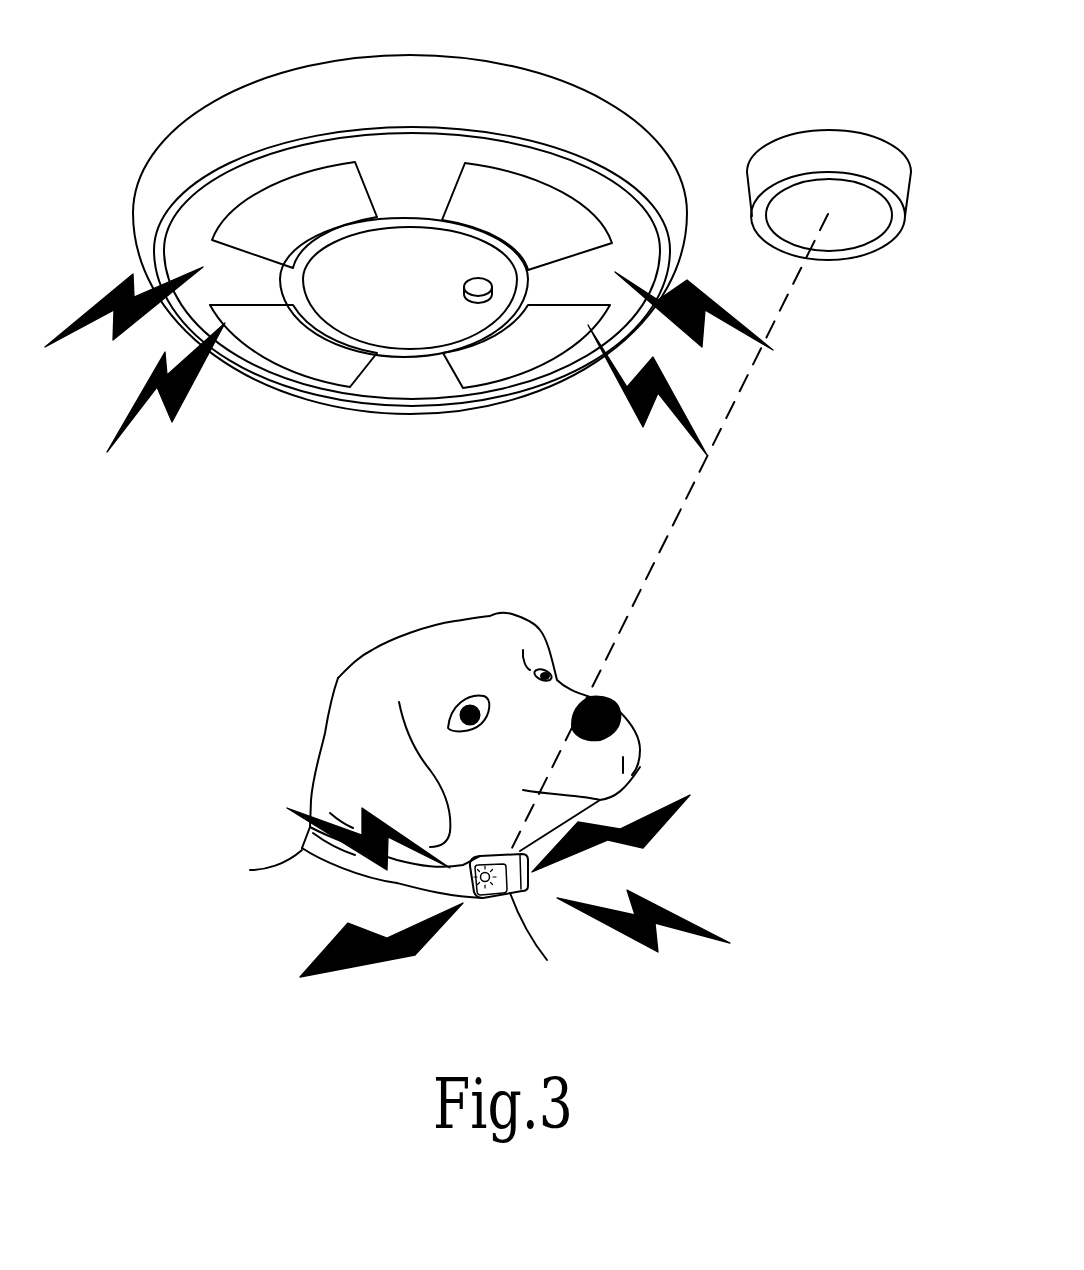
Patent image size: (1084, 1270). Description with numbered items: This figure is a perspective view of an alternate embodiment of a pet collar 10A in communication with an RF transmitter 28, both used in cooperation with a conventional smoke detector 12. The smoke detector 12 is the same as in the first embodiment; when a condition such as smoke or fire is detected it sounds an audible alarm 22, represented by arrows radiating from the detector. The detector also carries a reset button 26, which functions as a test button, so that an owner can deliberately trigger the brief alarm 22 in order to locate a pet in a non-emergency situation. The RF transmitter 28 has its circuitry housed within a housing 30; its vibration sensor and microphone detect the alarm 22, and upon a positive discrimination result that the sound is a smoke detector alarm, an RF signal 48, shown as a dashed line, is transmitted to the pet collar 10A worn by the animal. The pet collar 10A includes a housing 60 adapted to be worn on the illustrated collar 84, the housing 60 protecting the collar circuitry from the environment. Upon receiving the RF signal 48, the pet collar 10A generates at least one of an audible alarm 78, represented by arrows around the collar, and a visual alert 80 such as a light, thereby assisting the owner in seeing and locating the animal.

The conventional smoke detector 12 is at (614, 95).
The reset button 26 is at (478, 296).
The audible alarm 22 is at (622, 385).
The RF transmitter 28 is at (900, 136).
The housing 30 is at (816, 138).
The RF signal 48 is at (670, 535).
The pet collar 10A is at (286, 827).
The collar 84 is at (343, 858).
The housing 60 is at (533, 905).
The visual alert 80 is at (478, 898).
The audible alarm 78 is at (672, 907).